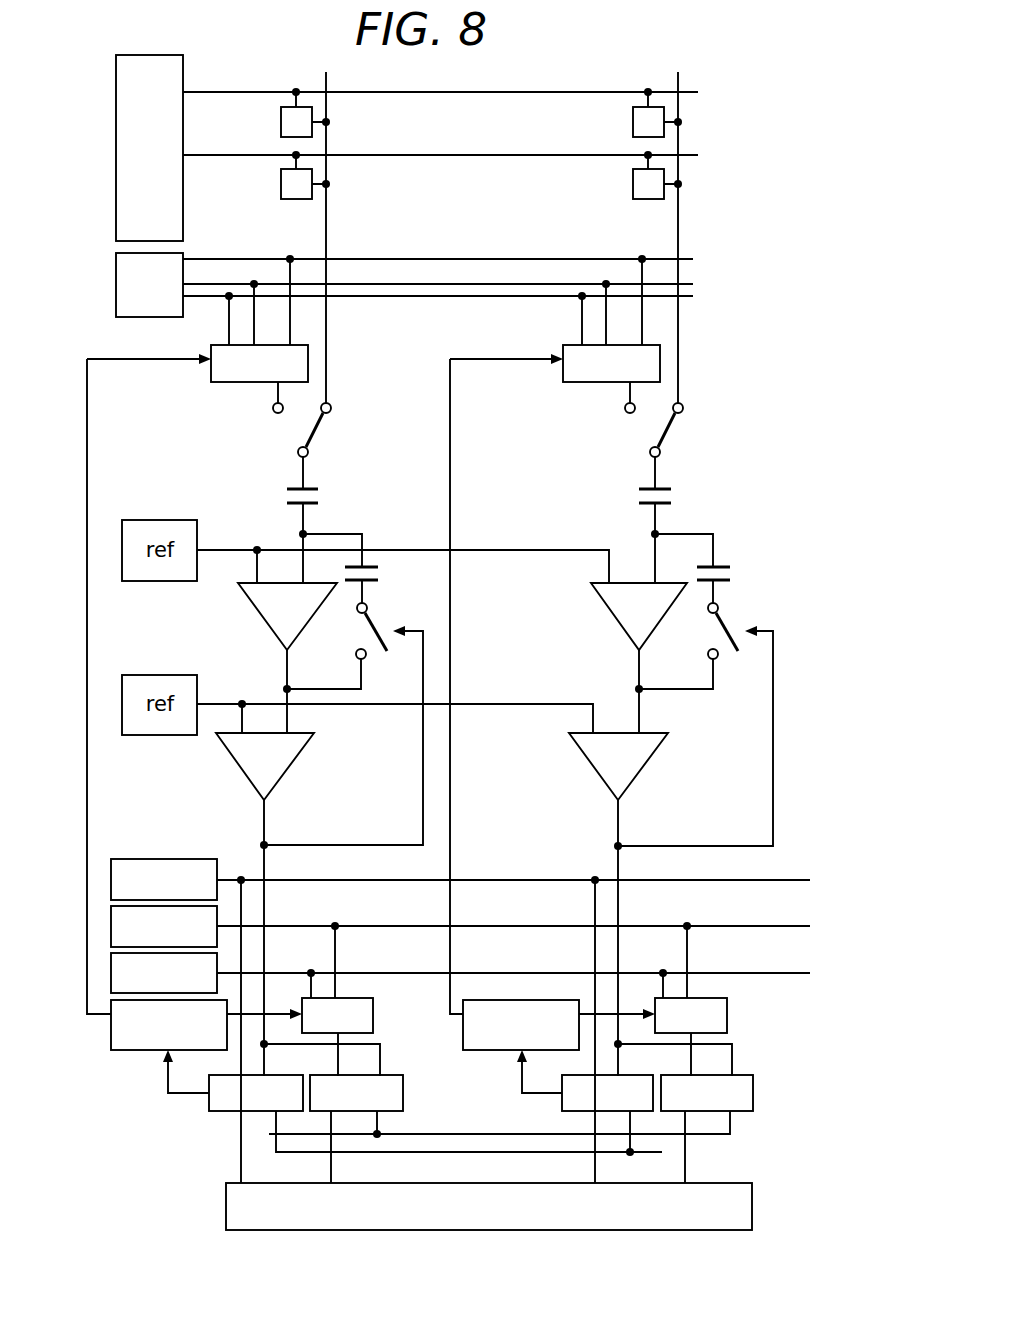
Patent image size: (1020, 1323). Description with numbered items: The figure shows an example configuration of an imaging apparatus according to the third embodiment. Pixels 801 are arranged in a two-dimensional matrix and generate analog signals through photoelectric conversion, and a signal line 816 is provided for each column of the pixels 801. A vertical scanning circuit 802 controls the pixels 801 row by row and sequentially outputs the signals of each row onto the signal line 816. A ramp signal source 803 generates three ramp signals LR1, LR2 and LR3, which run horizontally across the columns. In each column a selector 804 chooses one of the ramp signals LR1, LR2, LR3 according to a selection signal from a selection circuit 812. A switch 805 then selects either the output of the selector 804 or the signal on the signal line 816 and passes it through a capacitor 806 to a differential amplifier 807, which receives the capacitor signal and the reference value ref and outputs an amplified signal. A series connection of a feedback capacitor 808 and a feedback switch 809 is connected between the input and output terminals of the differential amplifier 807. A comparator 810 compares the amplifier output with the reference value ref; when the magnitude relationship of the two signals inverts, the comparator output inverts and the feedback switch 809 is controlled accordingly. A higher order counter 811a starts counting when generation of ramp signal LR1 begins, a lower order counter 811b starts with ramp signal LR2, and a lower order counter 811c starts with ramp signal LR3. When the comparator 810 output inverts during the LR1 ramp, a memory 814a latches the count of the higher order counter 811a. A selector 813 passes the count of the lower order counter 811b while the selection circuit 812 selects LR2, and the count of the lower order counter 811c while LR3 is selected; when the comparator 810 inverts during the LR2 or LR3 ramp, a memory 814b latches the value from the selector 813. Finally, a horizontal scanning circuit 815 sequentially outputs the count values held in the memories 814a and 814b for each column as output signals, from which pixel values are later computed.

The pixels 801 is at (281, 119).
The vertical scanning circuit 802 is at (116, 148).
The ramp signal source 803 is at (116, 284).
The selector 804 is at (233, 383).
The switch 805 is at (311, 428).
The capacitor 806 is at (320, 496).
The differential amplifier 807 is at (264, 621).
The feedback capacitor 808 is at (379, 573).
The feedback switch 809 is at (379, 649).
The comparator 810 is at (289, 770).
The higher order counter 811a is at (111, 876).
The lower order counter 811b is at (111, 922).
The lower order counter 811c is at (111, 969).
The selection circuit 812 is at (111, 1027).
The selector 813 is at (373, 1014).
The memory 814a is at (202, 1102).
The memory 814b is at (403, 1097).
The horizontal scanning circuit 815 is at (226, 1204).
The signal line 816 is at (326, 225).
The ramp signal LR1 is at (378, 259).
The ramp signal LR2 is at (428, 284).
The ramp signal LR3 is at (480, 296).